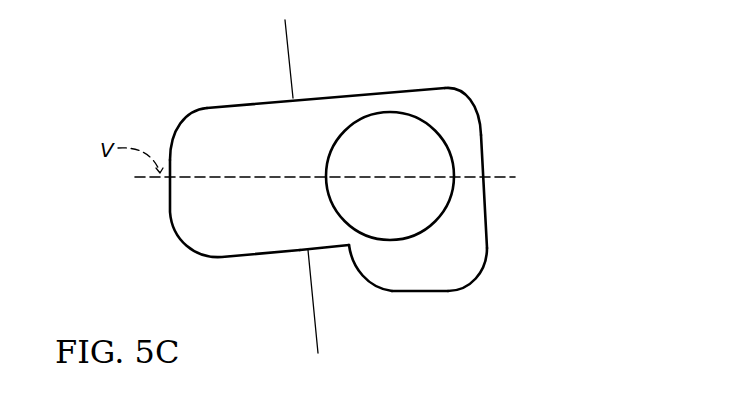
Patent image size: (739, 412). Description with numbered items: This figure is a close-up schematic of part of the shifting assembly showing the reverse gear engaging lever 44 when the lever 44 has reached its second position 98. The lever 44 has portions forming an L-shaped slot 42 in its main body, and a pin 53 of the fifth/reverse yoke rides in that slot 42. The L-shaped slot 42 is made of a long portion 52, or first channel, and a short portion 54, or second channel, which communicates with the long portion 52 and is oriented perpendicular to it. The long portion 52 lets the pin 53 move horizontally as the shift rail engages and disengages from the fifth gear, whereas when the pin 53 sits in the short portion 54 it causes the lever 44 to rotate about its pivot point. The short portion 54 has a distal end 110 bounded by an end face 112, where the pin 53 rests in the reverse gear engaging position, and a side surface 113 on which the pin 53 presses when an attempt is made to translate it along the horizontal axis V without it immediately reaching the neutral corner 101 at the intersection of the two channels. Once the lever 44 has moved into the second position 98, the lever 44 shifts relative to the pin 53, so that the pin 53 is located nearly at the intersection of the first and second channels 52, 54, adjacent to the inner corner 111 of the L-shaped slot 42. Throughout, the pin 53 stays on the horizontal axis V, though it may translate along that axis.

The L-shaped slot 42 is at (222, 258).
The reverse gear engaging lever 44 is at (483, 92).
The long portion 52 is at (216, 138).
The pin 53 is at (417, 140).
The short portion 54 is at (465, 246).
The second position 98 is at (524, 267).
The corner 101 is at (447, 90).
The distal end 110 is at (452, 291).
The inner corner 111 is at (347, 247).
The end face 112 is at (404, 291).
The side surface 113 is at (350, 258).